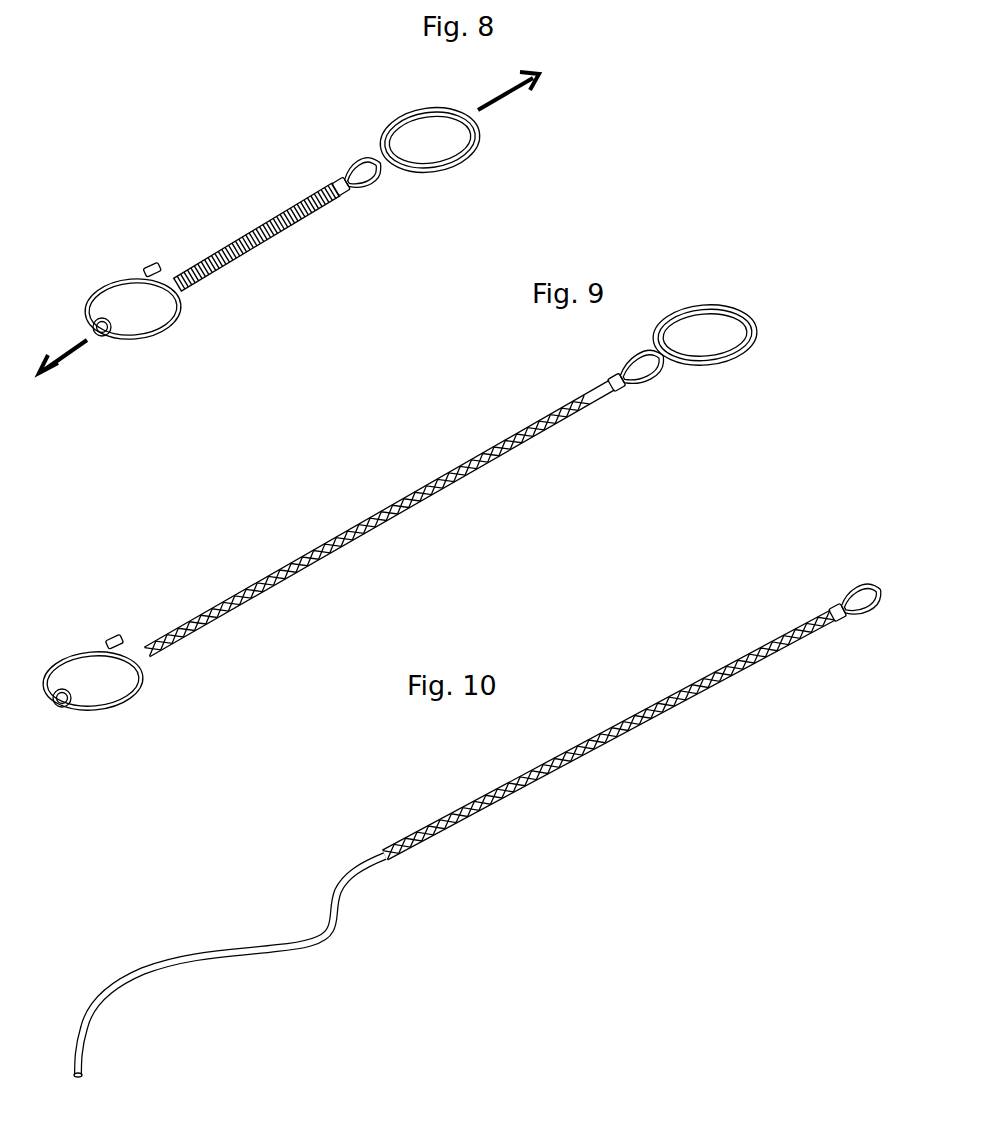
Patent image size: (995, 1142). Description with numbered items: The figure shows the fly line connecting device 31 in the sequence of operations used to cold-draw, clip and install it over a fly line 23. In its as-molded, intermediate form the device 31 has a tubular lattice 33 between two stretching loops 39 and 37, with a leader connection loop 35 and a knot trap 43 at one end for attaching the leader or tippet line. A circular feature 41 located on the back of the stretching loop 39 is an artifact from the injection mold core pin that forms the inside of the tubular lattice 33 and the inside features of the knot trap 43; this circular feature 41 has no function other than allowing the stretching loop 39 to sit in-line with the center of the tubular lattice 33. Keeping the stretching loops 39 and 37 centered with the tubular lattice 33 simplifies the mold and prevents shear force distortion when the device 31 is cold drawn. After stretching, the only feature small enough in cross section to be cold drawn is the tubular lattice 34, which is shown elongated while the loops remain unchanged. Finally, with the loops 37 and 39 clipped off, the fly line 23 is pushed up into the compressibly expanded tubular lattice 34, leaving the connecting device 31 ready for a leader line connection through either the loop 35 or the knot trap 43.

In FIG. 10, the fly line 23 is at (305, 953).
In FIG. 8, the fly line connecting device 31 is at (288, 195).
In FIG. 9, the fly line connecting device 31 is at (540, 408).
In FIG. 10, the fly line connecting device 31 is at (663, 682).
In FIG. 8, the tubular lattice 33 is at (272, 245).
In FIG. 9, the tubular lattice 34 is at (468, 477).
In FIG. 10, the tubular lattice 34 is at (643, 728).
In FIG. 8, the leader connection loop 35 is at (382, 185).
In FIG. 9, the leader connection loop 35 is at (657, 382).
In FIG. 10, the leader connection loop 35 is at (850, 582).
In FIG. 8, the stretching loop 37 is at (395, 110).
In FIG. 9, the stretching loop 37 is at (753, 352).
In FIG. 8, the stretching loop 39 is at (167, 330).
In FIG. 9, the stretching loop 39 is at (127, 705).
In FIG. 8, the circular feature 41 is at (105, 333).
In FIG. 9, the circular feature 41 is at (67, 708).
In FIG. 8, the knot trap 43 is at (340, 203).
In FIG. 9, the knot trap 43 is at (613, 388).
In FIG. 10, the knot trap 43 is at (823, 608).